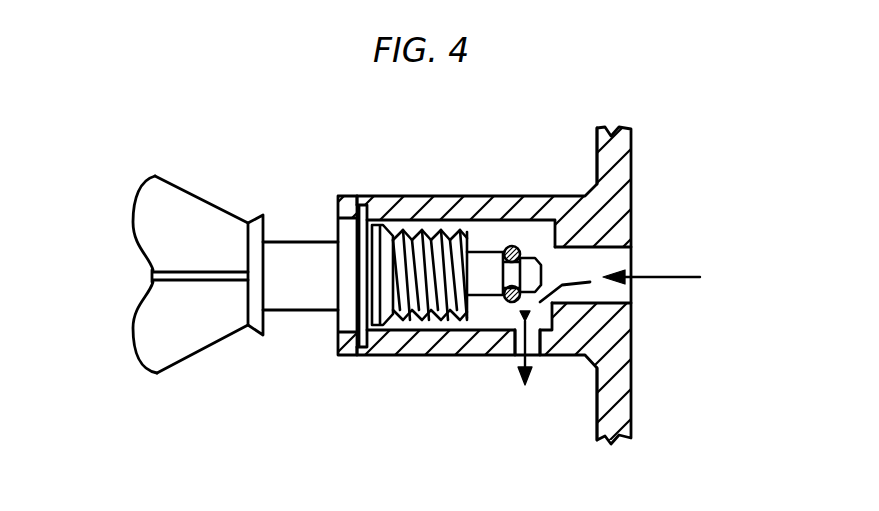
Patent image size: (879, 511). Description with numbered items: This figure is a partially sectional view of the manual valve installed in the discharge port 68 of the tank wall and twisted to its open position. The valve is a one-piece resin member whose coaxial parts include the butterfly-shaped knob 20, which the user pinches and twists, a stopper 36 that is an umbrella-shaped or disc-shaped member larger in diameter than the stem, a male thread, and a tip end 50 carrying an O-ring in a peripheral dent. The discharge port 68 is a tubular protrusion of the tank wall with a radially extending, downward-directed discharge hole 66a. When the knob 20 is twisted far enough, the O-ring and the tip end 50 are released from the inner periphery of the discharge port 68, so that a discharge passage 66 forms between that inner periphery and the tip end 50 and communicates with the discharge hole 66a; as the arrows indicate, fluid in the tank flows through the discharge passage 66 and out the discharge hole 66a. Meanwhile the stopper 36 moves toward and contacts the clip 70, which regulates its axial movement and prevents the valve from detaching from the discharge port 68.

The knob 20 is at (160, 352).
The stopper 36 is at (372, 328).
The tip end 50 is at (532, 256).
The discharge passage 66 is at (552, 304).
The discharge hole 66a is at (519, 390).
The discharge port 68 is at (579, 170).
The clip 70 is at (352, 352).